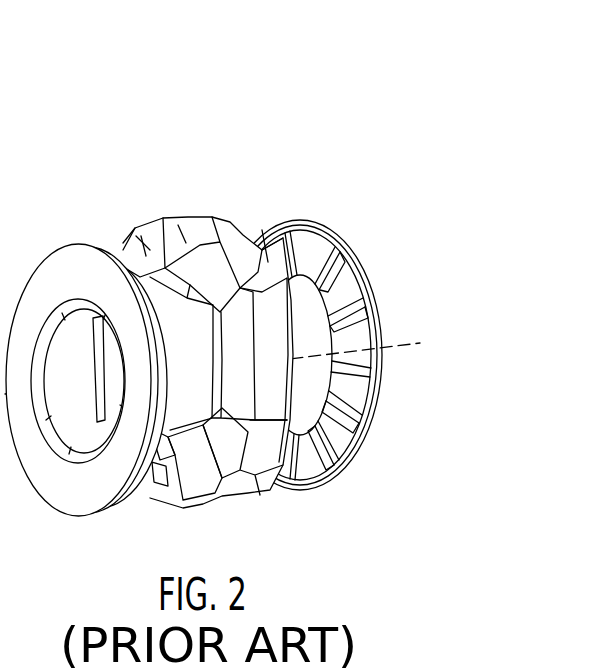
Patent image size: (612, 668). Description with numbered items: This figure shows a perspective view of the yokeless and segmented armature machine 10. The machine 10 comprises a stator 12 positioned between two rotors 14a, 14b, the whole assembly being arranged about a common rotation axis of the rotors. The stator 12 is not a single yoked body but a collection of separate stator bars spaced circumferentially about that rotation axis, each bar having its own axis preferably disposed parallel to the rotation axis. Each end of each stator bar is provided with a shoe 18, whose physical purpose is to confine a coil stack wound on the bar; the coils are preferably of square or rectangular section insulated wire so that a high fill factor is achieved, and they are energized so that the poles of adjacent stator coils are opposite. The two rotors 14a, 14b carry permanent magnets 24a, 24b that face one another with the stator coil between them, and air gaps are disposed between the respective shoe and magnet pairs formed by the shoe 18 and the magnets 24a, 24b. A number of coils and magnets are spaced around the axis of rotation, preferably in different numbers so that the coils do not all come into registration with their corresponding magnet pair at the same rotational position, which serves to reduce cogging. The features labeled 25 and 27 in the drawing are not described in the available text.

The machine 10 is at (212, 301).
The stator 12 is at (218, 216).
The rotor 14a is at (63, 245).
The rotor 14b is at (318, 226).
The shoe 18 is at (198, 483).
The permanent magnet 24a is at (157, 487).
The permanent magnet 24b is at (333, 450).
The spoke / rib 25 is at (343, 285).
The cutout 27 is at (162, 272).